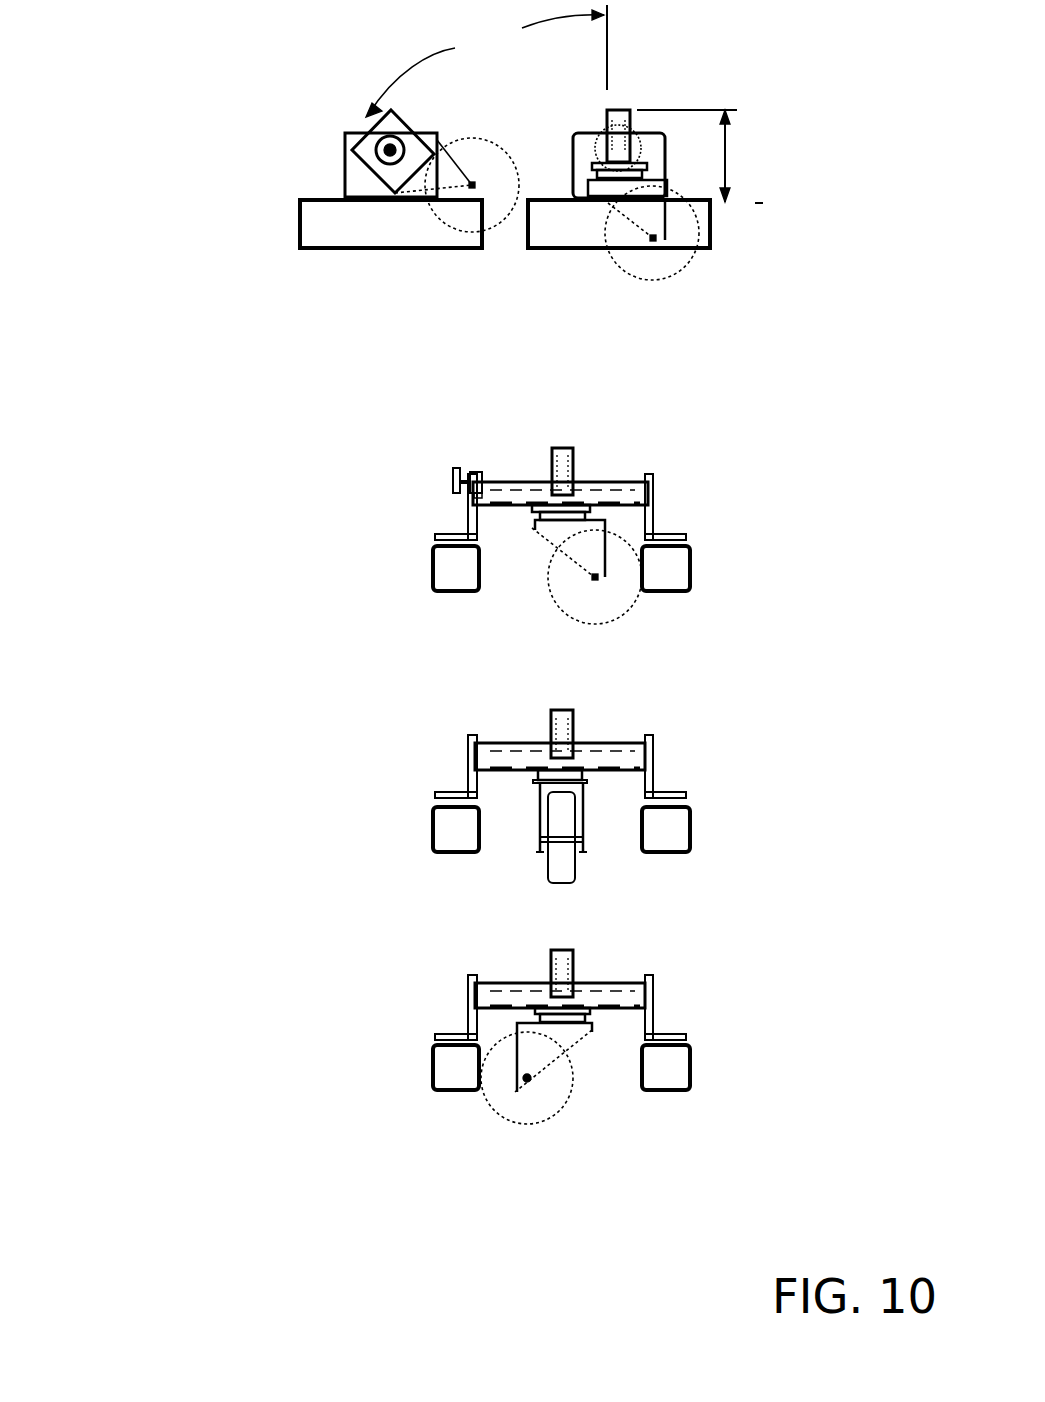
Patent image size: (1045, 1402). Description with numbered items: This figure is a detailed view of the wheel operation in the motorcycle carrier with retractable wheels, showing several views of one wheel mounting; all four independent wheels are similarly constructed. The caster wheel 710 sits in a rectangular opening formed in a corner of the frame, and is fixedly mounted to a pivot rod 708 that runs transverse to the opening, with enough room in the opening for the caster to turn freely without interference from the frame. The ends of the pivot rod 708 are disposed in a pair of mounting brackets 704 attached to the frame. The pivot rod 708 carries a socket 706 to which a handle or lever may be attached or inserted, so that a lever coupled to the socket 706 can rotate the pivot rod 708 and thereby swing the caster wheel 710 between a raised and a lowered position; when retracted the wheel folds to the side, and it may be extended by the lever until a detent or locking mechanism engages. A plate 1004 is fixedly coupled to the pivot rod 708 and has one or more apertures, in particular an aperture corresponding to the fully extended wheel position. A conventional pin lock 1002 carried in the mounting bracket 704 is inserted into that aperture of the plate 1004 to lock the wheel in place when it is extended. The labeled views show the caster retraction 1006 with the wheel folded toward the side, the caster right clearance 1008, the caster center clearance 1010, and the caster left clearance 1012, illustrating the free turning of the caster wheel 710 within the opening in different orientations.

The mounting bracket 704 is at (468, 1037).
The socket 706 is at (557, 448).
The pivot rod 708 is at (622, 987).
The caster wheel 710 is at (538, 1102).
The pin lock 1002 is at (447, 482).
The plate 1004 is at (478, 467).
The Caster Retraction 1006 is at (413, 142).
The Caster Right Clearance 1008 is at (411, 476).
The Caster Center Clearance 1010 is at (364, 796).
The Caster Left Clearance 1012 is at (473, 1046).